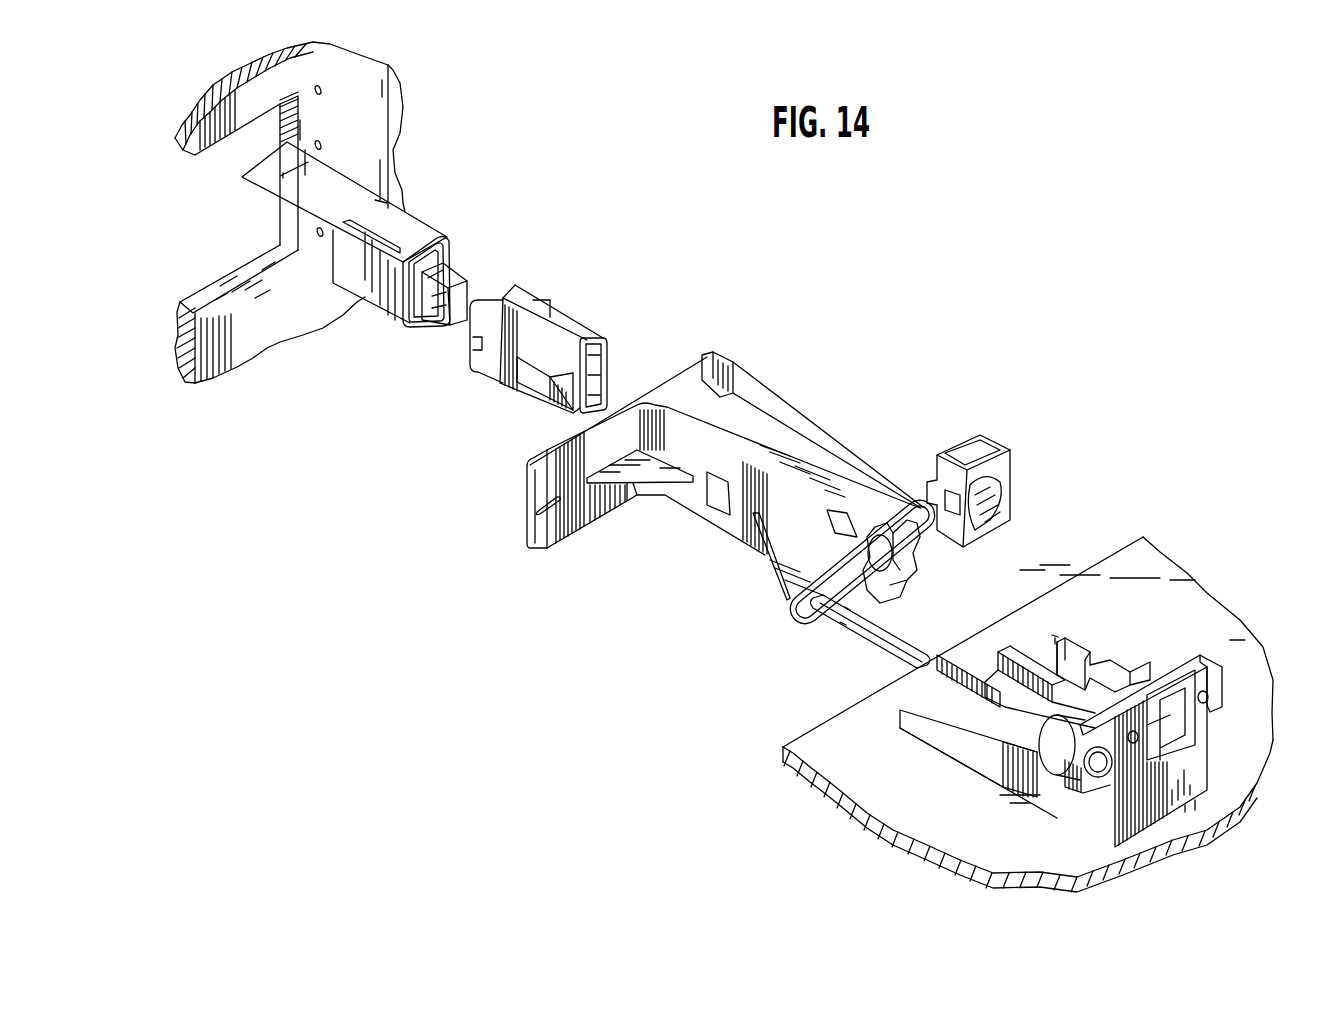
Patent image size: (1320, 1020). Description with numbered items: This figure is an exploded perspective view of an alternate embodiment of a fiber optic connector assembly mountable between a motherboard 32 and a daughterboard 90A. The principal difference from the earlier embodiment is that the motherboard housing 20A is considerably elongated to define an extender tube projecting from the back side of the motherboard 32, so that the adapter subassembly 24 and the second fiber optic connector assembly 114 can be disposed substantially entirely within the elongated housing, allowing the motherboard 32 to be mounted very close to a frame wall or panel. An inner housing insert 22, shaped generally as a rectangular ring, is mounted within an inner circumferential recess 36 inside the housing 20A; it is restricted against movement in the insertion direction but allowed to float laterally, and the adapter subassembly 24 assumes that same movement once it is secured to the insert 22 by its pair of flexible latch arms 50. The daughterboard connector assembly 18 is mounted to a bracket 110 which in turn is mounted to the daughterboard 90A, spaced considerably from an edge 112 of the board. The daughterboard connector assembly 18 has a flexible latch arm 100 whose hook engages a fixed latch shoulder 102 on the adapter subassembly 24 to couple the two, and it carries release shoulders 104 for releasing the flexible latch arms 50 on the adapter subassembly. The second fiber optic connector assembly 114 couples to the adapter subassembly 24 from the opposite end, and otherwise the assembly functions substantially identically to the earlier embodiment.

The daughterboard connector assembly 18 is at (1130, 652).
The motherboard housing 20A is at (767, 430).
The inner housing insert 22 is at (990, 443).
The motherboard adapter subassembly 24 is at (606, 334).
The printed circuit board (motherboard) 32 is at (370, 147).
The inner circumferential recess 36 is at (920, 573).
The flexible latch arms 50 is at (540, 323).
The daughterboard 90A is at (1167, 575).
The flexible latch arm 100 is at (1000, 713).
The fixed latch shoulder 102 is at (537, 387).
The release shoulders 104 is at (1085, 646).
The bracket 110 is at (1200, 770).
The edge 112 is at (1127, 547).
The second fiber optic connector assembly 114 is at (460, 272).